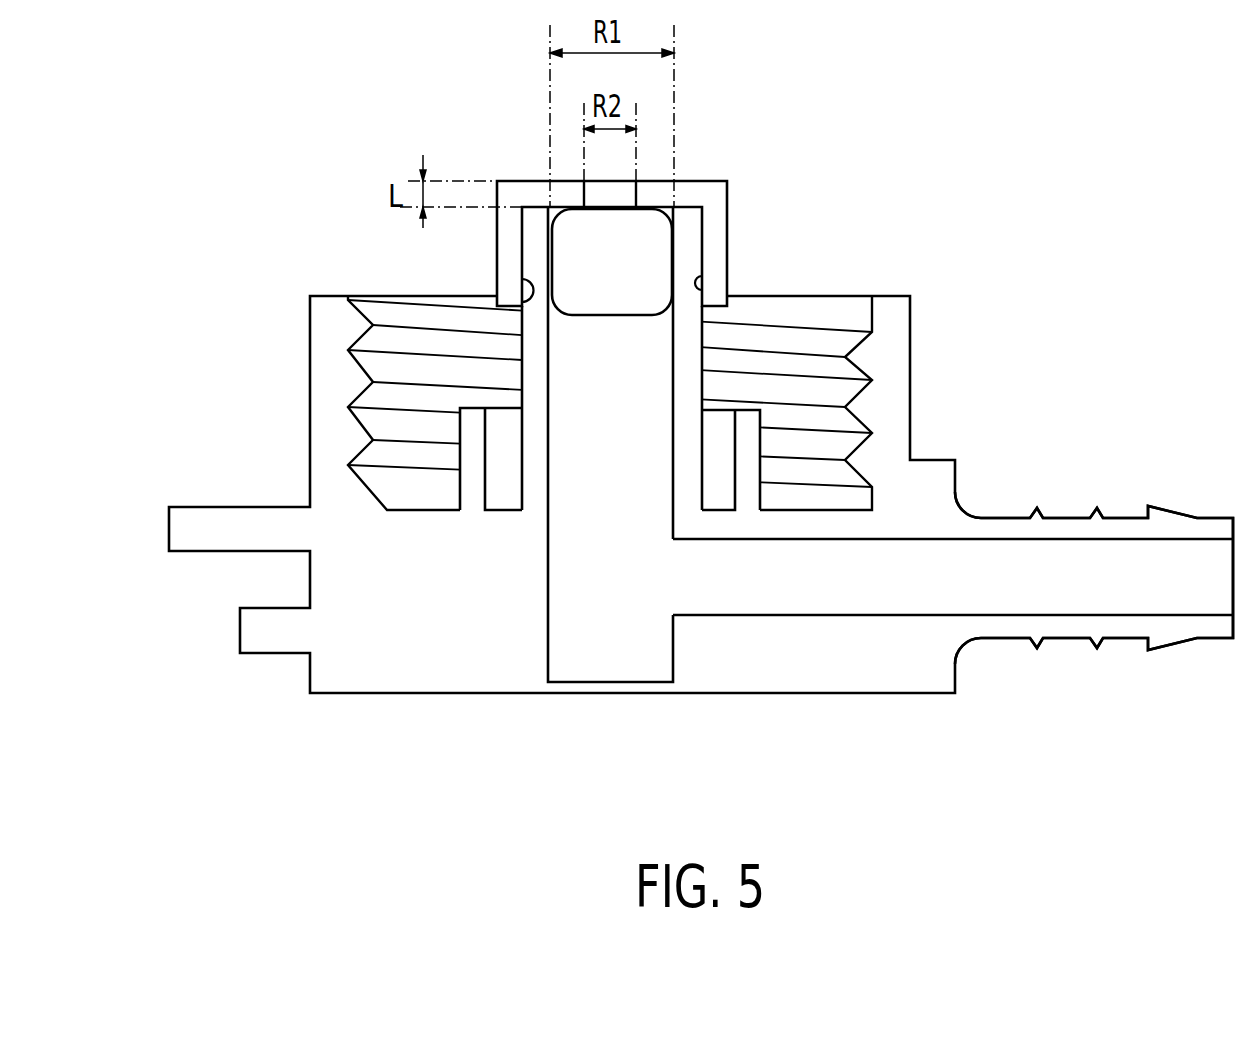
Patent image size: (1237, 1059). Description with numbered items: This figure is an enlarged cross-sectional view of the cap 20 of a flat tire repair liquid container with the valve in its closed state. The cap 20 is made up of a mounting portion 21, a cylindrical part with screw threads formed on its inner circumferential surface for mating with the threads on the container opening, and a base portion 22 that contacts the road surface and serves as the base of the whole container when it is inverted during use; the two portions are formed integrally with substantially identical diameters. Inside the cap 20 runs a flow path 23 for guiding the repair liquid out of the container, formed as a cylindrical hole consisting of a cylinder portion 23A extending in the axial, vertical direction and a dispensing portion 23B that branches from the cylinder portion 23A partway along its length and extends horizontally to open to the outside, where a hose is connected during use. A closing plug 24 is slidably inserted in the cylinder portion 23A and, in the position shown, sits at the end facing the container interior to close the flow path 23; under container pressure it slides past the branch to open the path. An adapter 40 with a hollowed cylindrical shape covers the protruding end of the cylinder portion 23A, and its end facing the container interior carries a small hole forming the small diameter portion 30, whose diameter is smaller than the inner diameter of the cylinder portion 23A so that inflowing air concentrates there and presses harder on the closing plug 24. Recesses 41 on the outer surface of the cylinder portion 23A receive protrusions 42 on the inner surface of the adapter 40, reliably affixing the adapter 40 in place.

The cap 20 is at (977, 253).
The mounting portion 21 is at (890, 400).
The base portion 22 is at (917, 668).
The flow path 23 is at (890, 516).
The cylinder portion 23A is at (622, 600).
The dispensing portion 23B is at (953, 659).
The closing plug 24 is at (632, 258).
The small diameter portion 30 is at (628, 183).
The adapter 40 is at (710, 192).
The recesses 41 is at (521, 300).
The protrusions 42 is at (522, 278).